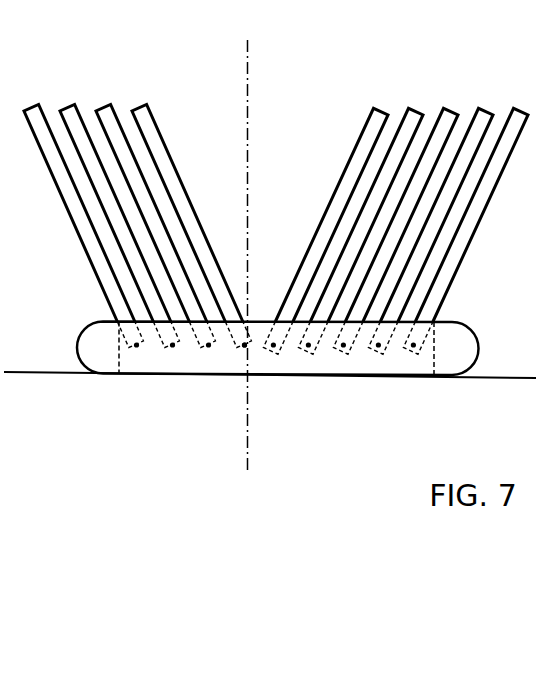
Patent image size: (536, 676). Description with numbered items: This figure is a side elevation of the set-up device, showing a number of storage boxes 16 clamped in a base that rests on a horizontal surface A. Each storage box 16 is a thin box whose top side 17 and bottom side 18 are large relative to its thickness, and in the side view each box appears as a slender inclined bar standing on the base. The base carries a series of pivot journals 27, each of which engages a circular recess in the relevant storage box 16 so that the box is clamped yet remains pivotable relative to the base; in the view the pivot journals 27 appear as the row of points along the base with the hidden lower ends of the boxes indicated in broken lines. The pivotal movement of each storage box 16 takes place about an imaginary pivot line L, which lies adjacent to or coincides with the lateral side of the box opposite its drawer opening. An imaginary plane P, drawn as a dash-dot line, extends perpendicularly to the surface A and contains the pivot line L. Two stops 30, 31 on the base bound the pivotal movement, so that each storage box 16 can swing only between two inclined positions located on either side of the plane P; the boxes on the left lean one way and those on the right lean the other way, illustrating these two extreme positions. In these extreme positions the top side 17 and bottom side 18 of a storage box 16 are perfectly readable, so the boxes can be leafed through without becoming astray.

The storage box 16 is at (377, 120).
The top side 17 is at (133, 186).
The bottom side 18 is at (136, 127).
The pivot journals 27 is at (343, 348).
The stop 30 is at (437, 368).
The stop 31 is at (118, 347).
The surface A is at (55, 372).
The imaginary pivot line L is at (242, 348).
The imaginary plane P is at (248, 72).